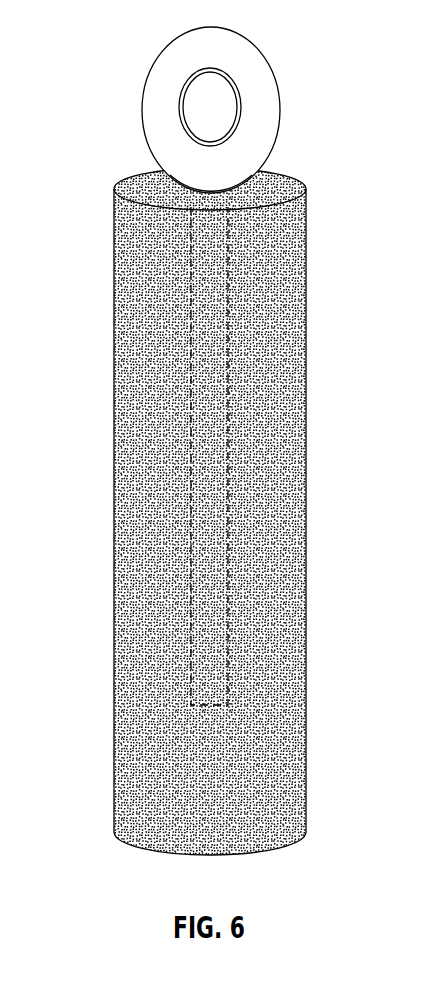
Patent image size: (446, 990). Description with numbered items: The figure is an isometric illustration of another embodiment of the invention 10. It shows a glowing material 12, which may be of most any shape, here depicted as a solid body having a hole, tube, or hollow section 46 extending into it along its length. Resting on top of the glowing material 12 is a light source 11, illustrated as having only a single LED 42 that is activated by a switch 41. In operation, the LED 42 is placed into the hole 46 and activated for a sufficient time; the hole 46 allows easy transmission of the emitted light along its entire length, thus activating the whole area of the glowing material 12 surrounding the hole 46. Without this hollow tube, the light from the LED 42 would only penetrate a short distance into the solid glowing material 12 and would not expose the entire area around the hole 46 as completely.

The invention 10 is at (227, 438).
The light source 11 is at (212, 107).
The glowing material 12 is at (220, 511).
The switch 41 is at (208, 100).
The LED 42 is at (205, 190).
The hole 46 is at (240, 266).